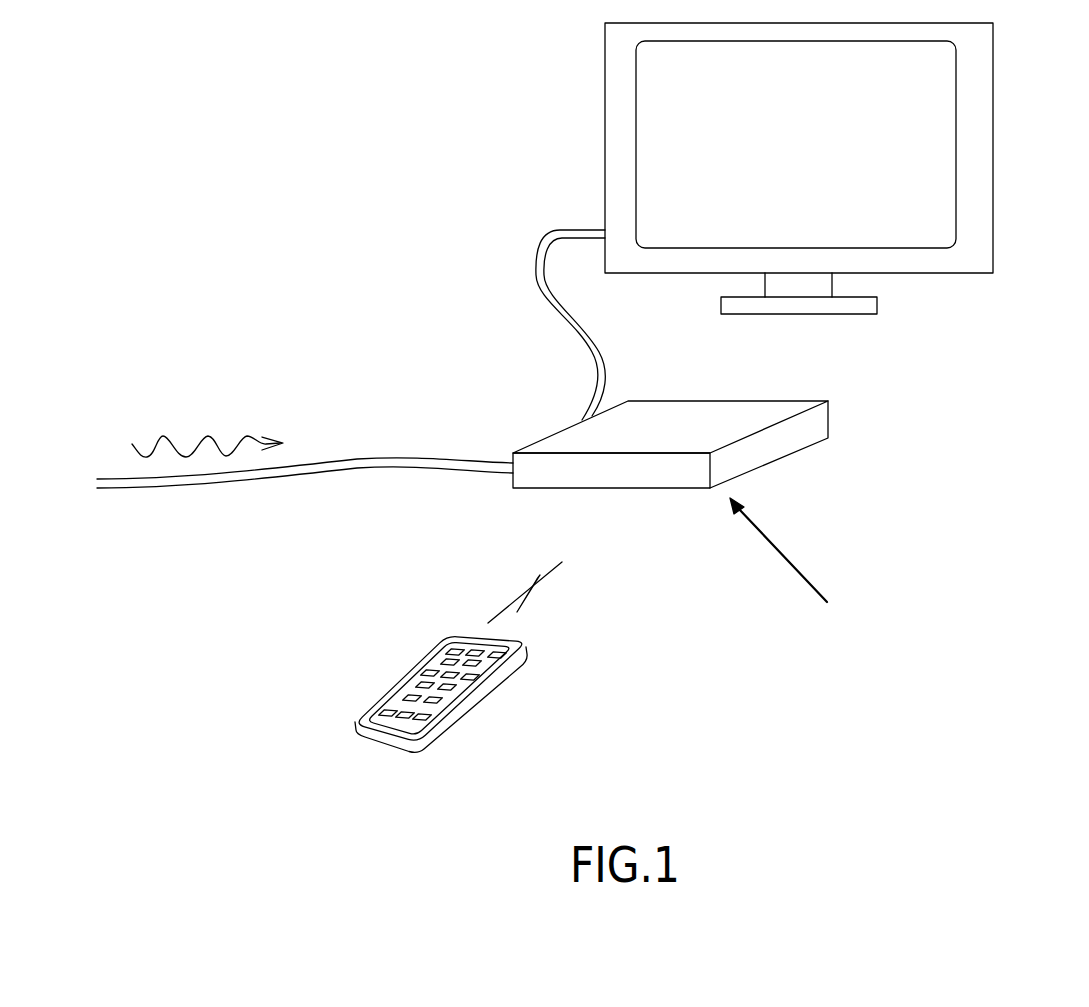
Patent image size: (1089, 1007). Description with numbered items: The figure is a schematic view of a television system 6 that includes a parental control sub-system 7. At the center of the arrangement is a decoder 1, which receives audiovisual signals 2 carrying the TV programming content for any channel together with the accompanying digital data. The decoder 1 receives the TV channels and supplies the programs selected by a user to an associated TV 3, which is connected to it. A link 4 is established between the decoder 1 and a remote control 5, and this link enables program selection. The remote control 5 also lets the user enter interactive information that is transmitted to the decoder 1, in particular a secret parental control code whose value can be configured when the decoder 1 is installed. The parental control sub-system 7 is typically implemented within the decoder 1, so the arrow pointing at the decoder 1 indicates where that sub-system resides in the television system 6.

The decoder 1 is at (753, 450).
The audiovisual signals 2 is at (190, 445).
The TV 3 is at (975, 81).
The link 4 is at (543, 581).
The remote control 5 is at (483, 682).
The television system 6 is at (362, 234).
The parental control sub-system 7 is at (796, 562).